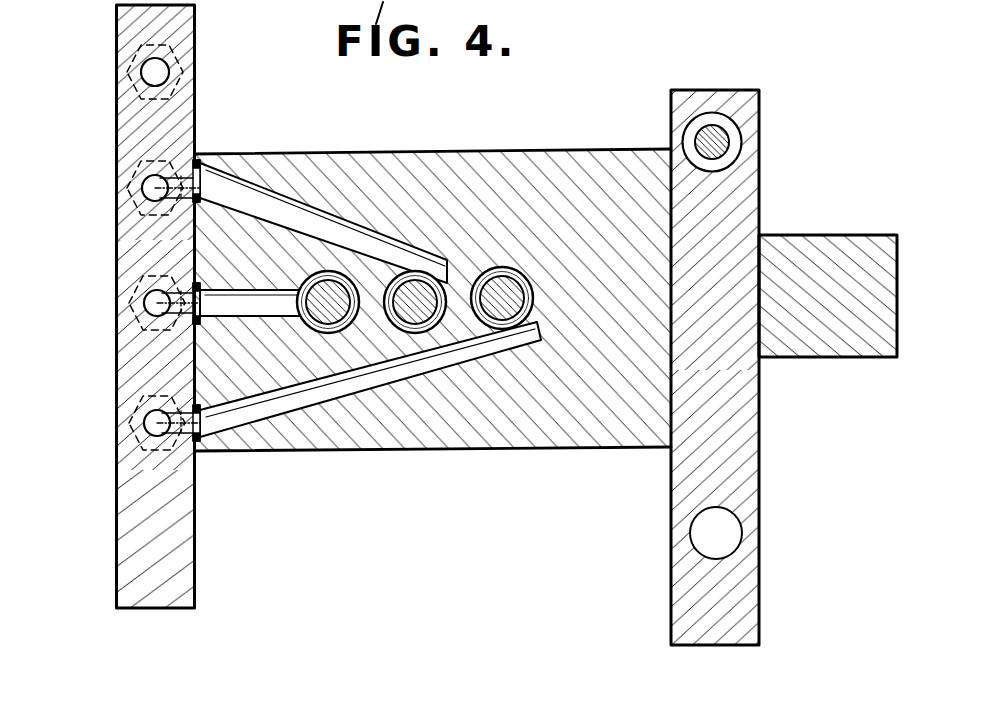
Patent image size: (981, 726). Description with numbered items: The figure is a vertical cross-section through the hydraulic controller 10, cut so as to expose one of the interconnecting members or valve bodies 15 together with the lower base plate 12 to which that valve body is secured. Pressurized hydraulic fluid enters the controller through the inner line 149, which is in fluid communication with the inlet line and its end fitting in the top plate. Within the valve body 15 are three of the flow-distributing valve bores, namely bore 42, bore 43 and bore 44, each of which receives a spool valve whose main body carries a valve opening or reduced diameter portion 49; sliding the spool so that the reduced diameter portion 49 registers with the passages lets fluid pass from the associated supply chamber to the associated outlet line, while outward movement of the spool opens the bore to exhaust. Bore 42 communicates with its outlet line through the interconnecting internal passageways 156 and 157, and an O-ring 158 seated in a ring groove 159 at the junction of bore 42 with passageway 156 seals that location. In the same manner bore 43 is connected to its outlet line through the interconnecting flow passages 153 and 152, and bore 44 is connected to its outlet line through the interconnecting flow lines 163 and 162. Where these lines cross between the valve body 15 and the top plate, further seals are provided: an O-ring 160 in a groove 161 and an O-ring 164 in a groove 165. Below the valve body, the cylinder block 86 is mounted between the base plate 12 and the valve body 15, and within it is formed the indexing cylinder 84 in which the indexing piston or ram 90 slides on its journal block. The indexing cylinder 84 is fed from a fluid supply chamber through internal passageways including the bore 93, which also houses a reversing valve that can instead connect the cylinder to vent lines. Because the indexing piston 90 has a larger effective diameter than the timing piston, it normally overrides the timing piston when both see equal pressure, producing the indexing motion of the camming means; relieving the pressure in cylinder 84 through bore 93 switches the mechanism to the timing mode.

The controller 10 is at (550, 133).
The lower base plate 12 is at (848, 238).
The valve body 15 is at (435, 452).
The valve bore 42 is at (310, 326).
The valve bore 43 is at (396, 323).
The valve bore 44 is at (533, 298).
The valve opening or reduced diameter portion 49 is at (305, 284).
The indexing cylinder 84 is at (714, 116).
The cylinder block 86 is at (752, 590).
The indexing piston or ram 90 is at (722, 142).
The bore 93 is at (697, 543).
The inner line 149 is at (148, 72).
The interconnecting flow passage 152 is at (150, 189).
The interconnecting flow passage 153 is at (357, 228).
The internal passageway 156 is at (152, 305).
The internal passageway 157 is at (246, 302).
The O-ring 158 is at (199, 323).
The ring groove 159 is at (201, 285).
The O-ring 160 is at (204, 163).
The groove 161 is at (206, 184).
The interconnecting flow line 162 is at (152, 425).
The interconnecting flow line 163 is at (466, 356).
The O-ring 164 is at (212, 452).
The groove 165 is at (263, 440).